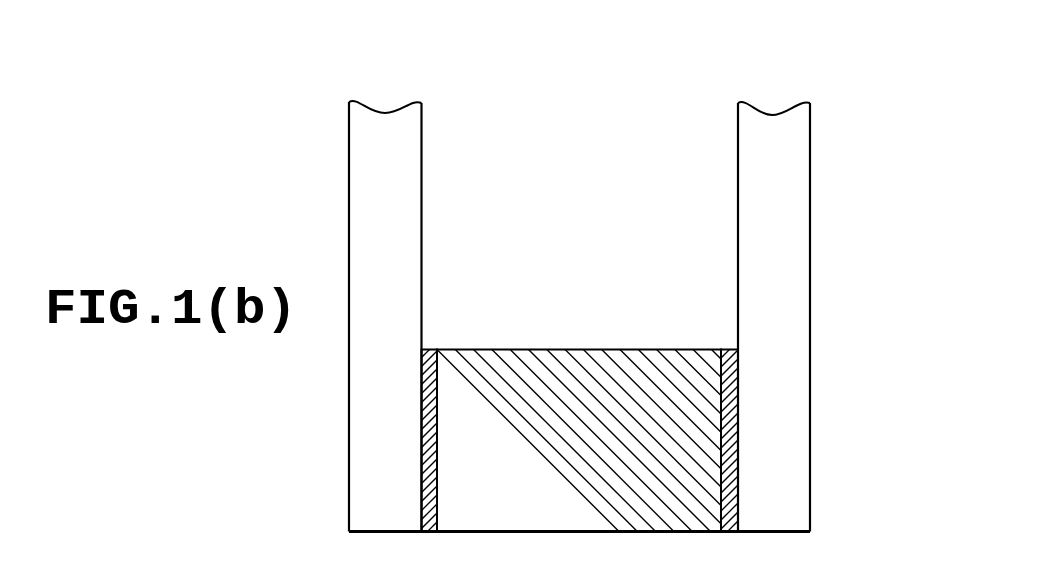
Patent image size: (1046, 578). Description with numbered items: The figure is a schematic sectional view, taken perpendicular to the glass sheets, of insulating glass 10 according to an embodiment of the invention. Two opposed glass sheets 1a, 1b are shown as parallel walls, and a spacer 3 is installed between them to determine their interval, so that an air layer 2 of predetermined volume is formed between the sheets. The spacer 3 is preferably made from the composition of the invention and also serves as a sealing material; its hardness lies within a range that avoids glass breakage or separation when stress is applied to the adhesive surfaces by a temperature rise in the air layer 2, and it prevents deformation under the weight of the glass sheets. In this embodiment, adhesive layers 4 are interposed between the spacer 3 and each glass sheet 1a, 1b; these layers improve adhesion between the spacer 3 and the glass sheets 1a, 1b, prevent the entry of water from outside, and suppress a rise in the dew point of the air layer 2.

The insulating glass 10 is at (577, 131).
The glass sheet 1a is at (360, 472).
The glass sheet 1b is at (772, 510).
The air layer 2 is at (663, 248).
The spacer 3 is at (663, 402).
The adhesive layer 4 is at (740, 433).